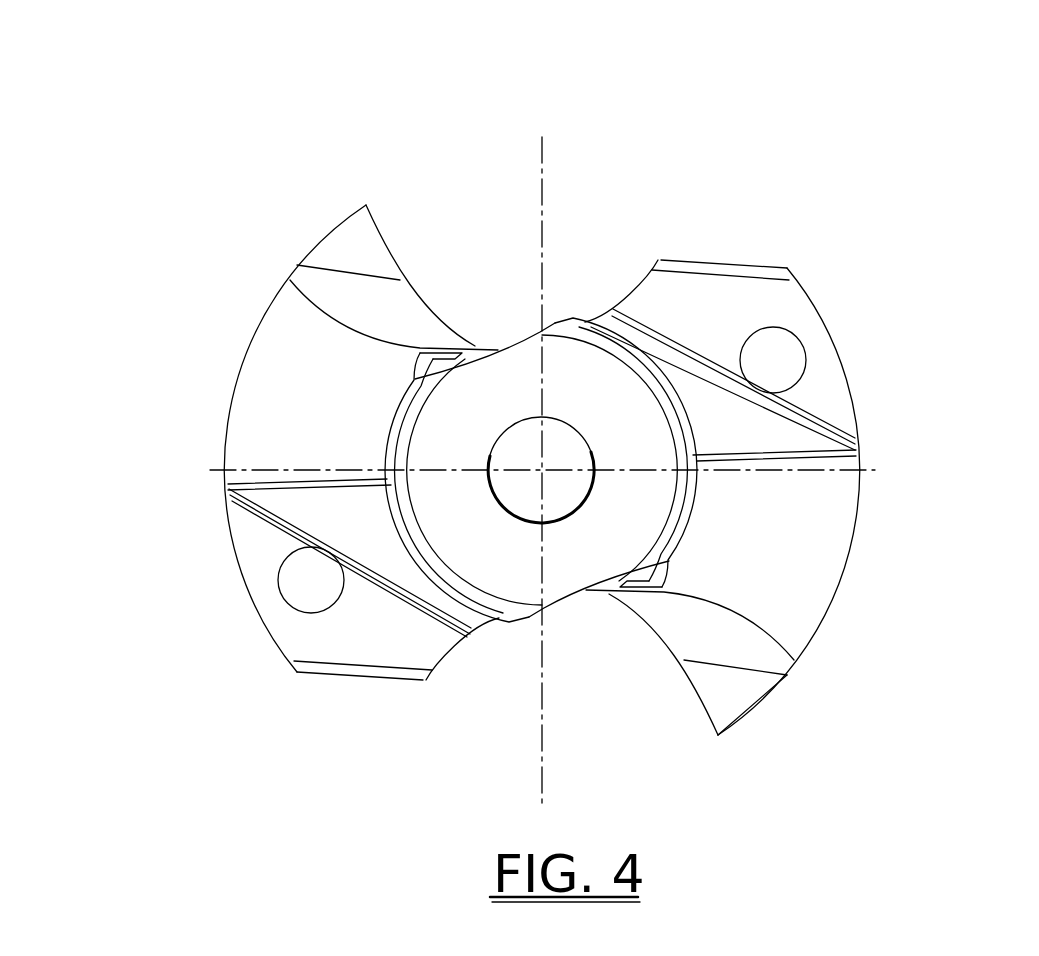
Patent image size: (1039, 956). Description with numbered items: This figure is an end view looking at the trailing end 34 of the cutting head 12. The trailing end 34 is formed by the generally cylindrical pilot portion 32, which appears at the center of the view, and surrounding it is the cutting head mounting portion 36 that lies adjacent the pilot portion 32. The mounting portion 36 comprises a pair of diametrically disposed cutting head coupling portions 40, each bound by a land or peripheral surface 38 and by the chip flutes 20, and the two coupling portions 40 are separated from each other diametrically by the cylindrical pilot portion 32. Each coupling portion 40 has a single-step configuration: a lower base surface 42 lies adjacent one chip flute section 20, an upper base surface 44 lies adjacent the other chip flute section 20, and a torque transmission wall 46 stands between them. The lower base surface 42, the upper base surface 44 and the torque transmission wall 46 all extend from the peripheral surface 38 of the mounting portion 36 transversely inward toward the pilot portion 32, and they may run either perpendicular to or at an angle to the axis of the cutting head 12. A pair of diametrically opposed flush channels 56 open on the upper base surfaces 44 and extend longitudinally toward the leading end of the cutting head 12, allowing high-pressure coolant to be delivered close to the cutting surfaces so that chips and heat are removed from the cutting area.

The cutting head 12 is at (456, 136).
The chip flutes 20 is at (628, 297).
The cylindrical pilot portion 32 is at (400, 418).
The trailing end 34 is at (515, 568).
The cutting head mounting portion 36 is at (760, 562).
The peripheral surface 38 is at (225, 503).
The cutting head coupling portions 40 is at (222, 450).
The lower base surface 42 is at (282, 380).
The upper base surface 44 is at (262, 540).
The torque transmission wall 46 is at (297, 482).
The flush channels 56 is at (277, 583).